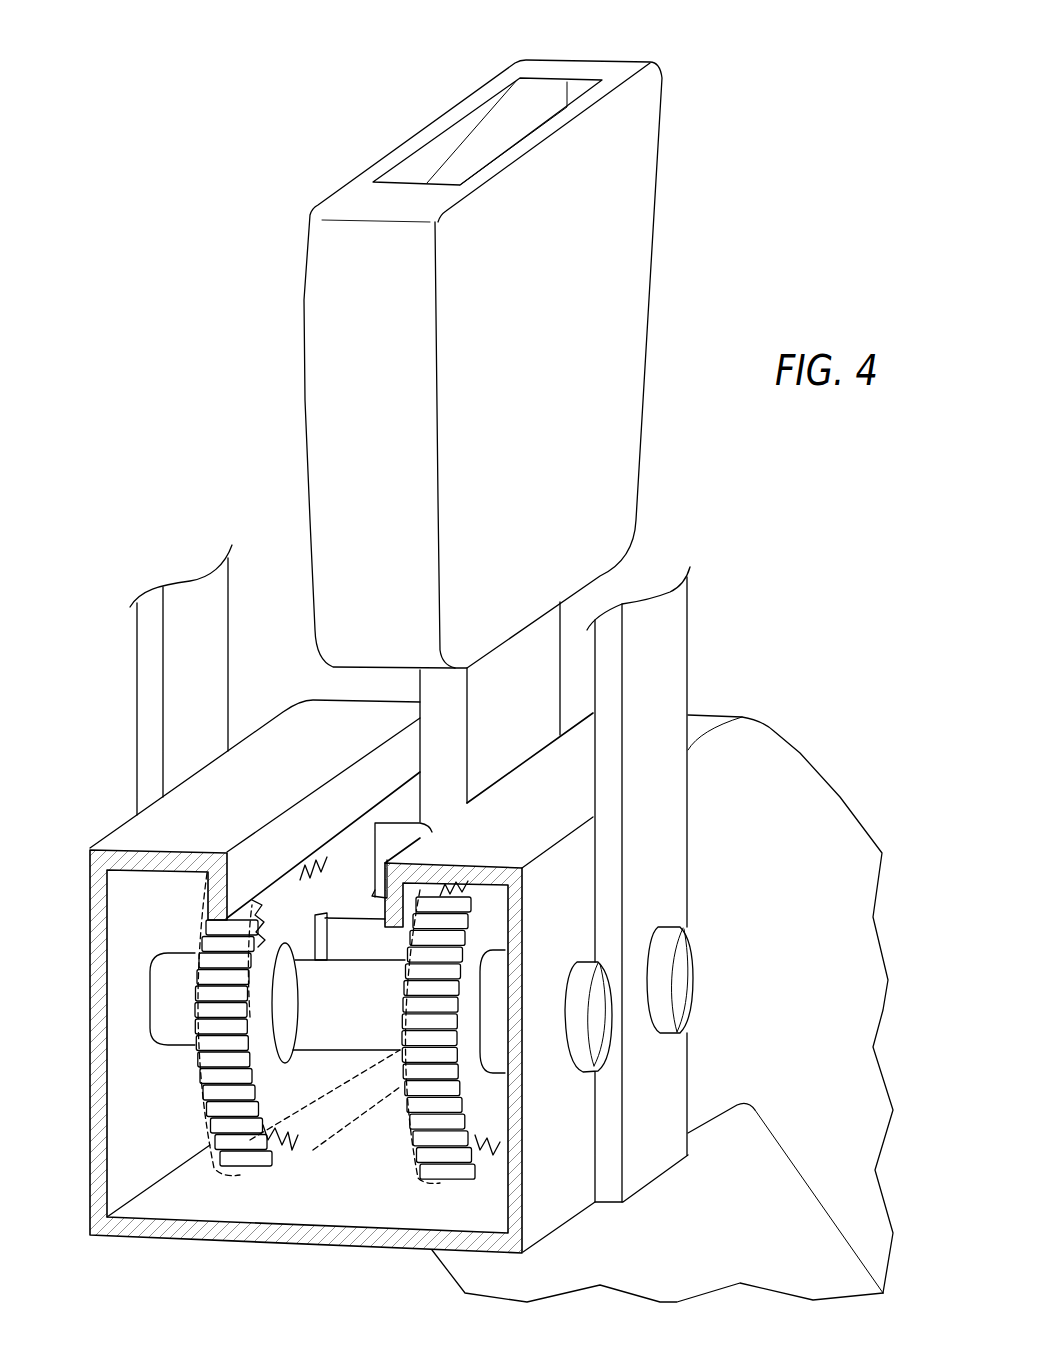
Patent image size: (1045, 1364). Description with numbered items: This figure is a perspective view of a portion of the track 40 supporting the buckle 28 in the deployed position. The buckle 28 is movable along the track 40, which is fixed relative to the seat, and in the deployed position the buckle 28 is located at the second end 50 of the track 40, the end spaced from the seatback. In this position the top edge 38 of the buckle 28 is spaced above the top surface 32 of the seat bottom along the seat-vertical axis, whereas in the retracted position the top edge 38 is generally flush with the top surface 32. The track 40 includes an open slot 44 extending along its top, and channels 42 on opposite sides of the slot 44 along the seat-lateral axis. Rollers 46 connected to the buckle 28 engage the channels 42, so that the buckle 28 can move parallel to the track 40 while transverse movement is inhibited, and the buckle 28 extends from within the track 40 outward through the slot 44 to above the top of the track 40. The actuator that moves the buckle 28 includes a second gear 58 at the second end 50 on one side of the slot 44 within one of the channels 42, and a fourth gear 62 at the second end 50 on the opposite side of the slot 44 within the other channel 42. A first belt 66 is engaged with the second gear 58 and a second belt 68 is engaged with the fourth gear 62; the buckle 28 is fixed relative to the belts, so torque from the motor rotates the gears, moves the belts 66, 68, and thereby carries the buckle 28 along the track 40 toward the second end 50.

The buckle 28 is at (630, 233).
The top edge 38 is at (618, 85).
The track 40 is at (815, 753).
The top surface 32 is at (801, 1228).
The second end 50 is at (220, 797).
The slot 44 is at (370, 793).
The rollers 46 is at (345, 878).
The channels 42 is at (140, 895).
The fourth gear 62 is at (280, 1112).
The second gear 58 is at (487, 1110).
The first belt 66 is at (410, 1157).
The second belt 68 is at (190, 1122).